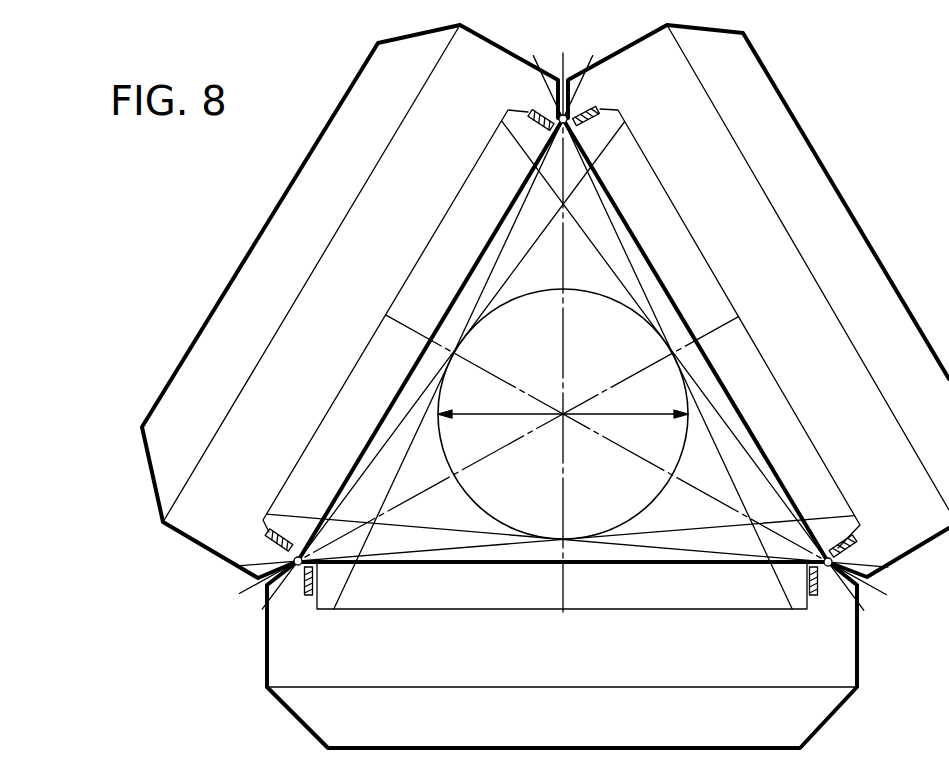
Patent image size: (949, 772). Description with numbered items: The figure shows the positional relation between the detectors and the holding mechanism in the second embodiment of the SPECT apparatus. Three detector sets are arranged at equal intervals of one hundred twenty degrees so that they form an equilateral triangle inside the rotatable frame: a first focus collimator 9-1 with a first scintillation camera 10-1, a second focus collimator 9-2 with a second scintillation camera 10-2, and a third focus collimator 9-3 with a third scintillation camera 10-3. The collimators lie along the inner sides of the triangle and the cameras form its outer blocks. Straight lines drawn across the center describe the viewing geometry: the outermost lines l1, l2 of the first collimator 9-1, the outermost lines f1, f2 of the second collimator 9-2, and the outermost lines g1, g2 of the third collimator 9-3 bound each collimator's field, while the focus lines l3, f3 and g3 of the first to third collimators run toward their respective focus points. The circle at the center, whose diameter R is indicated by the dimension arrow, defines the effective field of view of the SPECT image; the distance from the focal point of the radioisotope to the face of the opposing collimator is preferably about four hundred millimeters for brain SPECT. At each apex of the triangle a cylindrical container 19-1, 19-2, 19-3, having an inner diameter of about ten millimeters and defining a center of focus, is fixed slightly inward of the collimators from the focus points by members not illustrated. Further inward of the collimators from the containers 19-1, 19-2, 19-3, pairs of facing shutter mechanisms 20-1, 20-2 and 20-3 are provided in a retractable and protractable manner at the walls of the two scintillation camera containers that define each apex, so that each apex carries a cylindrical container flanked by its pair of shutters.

The first focus collimator 9-1 is at (755, 345).
The second focus collimator 9-2 is at (600, 610).
The third focus collimator 9-3 is at (466, 192).
The first scintillation camera 10-1 is at (848, 380).
The second scintillation camera 10-2 is at (562, 654).
The third scintillation camera 10-3 is at (337, 275).
The cylindrical container 19-1 is at (292, 575).
The cylindrical container 19-2 is at (570, 117).
The cylindrical container 19-3 is at (826, 572).
The shutter mechanism 20-1 is at (266, 529).
The shutter mechanism 20-2 is at (538, 114).
The shutter mechanism 20-3 is at (858, 536).
The outermost line of the second collimator f1 is at (477, 288).
The outermost line of the second collimator f2 is at (650, 290).
The focus line of the second collimator f3 is at (568, 312).
The outermost line of the third collimator g1 is at (758, 458).
The outermost line of the third collimator g2 is at (684, 552).
The focus line of the third collimator g3 is at (580, 427).
The outermost line of the first collimator l1 is at (454, 552).
The outermost line of the first collimator l2 is at (380, 432).
The focus line of the first collimator l3 is at (493, 453).
The diameter of the effective field of view R is at (563, 410).